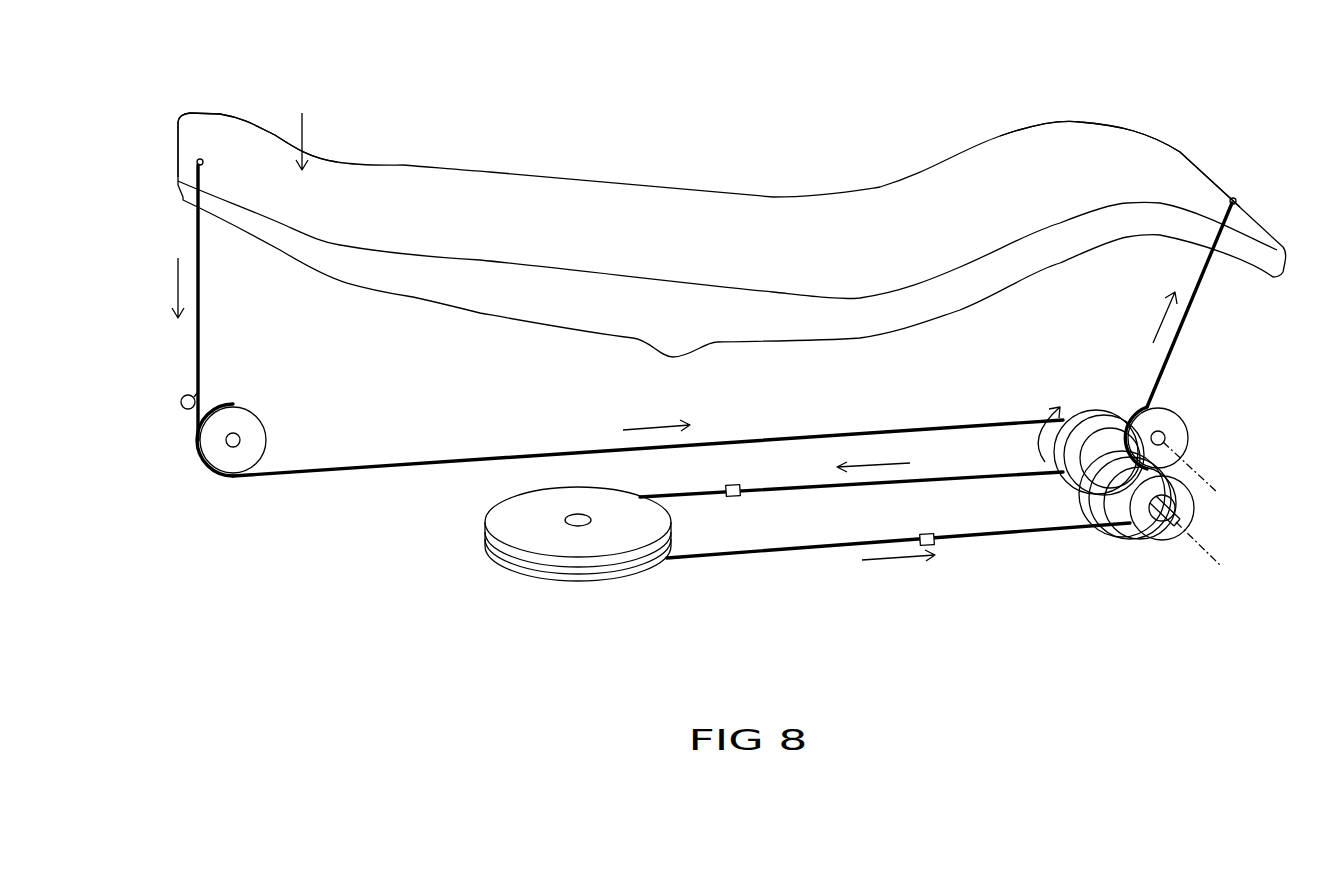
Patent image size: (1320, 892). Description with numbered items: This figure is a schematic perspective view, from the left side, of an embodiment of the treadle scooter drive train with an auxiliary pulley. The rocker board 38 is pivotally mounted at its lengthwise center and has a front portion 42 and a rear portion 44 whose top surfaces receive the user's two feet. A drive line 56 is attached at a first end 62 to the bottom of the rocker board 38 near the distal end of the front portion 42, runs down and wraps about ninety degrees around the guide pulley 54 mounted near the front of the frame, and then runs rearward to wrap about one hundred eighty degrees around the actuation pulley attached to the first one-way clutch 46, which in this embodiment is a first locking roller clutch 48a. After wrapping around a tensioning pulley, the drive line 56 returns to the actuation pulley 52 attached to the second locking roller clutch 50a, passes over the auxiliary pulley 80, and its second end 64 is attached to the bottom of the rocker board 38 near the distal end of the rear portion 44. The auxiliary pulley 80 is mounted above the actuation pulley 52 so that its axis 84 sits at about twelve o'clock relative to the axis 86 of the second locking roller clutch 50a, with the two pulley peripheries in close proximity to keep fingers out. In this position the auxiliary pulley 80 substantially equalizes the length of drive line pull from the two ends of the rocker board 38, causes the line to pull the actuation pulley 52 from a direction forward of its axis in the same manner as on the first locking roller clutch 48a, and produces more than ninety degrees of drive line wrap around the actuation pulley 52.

The rocker board 38 is at (777, 222).
The front portion 42 is at (204, 132).
The rear portion 44 is at (1128, 155).
The first one-way clutch 46 is at (1176, 410).
The first locking roller clutch 48a is at (1075, 410).
The second locking roller clutch 50a is at (1112, 507).
The actuation pulley 52 is at (1194, 510).
The guide pulley 54 is at (236, 423).
The drive line 56 is at (300, 463).
The first end 62 is at (197, 166).
The second end 64 is at (1228, 207).
The auxiliary pulley 80 is at (1148, 438).
The axis 84 is at (1188, 462).
The axis 86 is at (1212, 558).